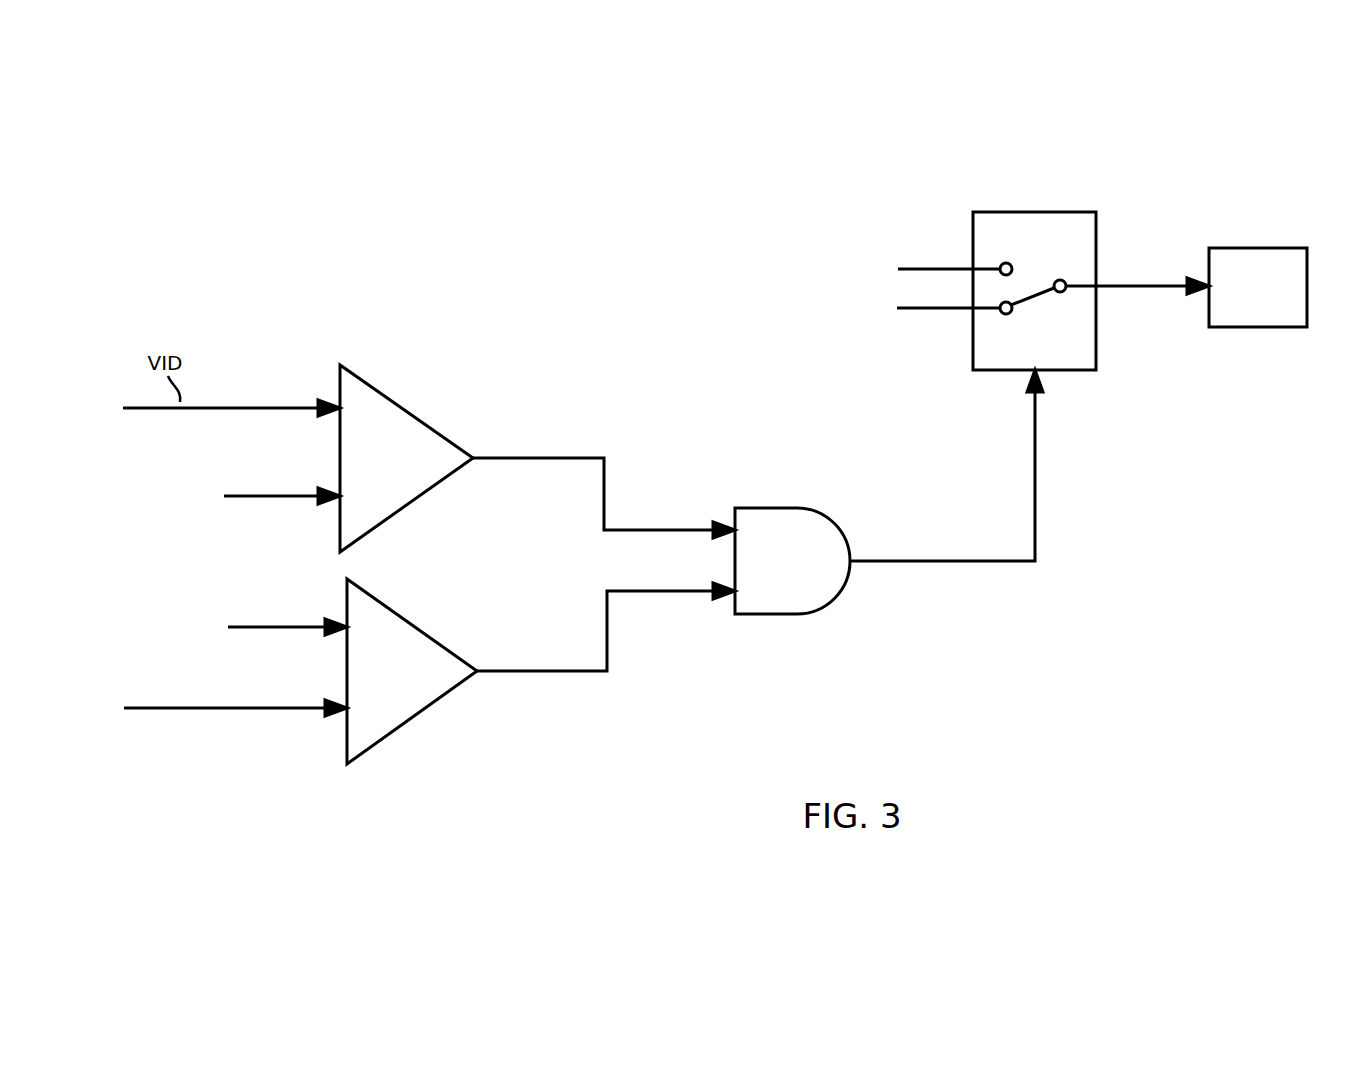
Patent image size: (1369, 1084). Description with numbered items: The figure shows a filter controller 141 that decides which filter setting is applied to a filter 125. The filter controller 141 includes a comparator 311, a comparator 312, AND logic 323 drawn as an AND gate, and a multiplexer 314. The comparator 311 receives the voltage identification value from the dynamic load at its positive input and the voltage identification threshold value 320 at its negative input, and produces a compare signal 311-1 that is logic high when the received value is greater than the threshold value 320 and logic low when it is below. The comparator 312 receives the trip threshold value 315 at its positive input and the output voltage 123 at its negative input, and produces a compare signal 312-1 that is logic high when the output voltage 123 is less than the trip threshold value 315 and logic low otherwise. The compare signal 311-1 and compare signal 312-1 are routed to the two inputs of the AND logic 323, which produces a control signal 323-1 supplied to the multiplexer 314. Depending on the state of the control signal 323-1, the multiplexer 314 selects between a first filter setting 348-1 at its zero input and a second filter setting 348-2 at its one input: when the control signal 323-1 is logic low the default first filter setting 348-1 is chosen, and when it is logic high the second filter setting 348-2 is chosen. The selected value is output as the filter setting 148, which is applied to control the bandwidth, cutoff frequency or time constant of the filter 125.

The filter controller 141 is at (591, 281).
The comparator 311 is at (406, 458).
The comparator 312 is at (412, 671).
The VID threshold value 320 is at (262, 490).
The VTRIP threshold value 315 is at (253, 620).
The output voltage 123 is at (177, 710).
The compare signal 311-1 is at (560, 455).
The compare signal 312-1 is at (530, 668).
The AND logic 323 is at (792, 561).
The control signal 323-1 is at (935, 556).
The multiplexer 314 is at (1034, 291).
The second filter setting 348-2 is at (940, 262).
The first filter setting 348-1 is at (938, 315).
The filter setting 148 is at (1150, 276).
The filter 125 is at (1258, 287).